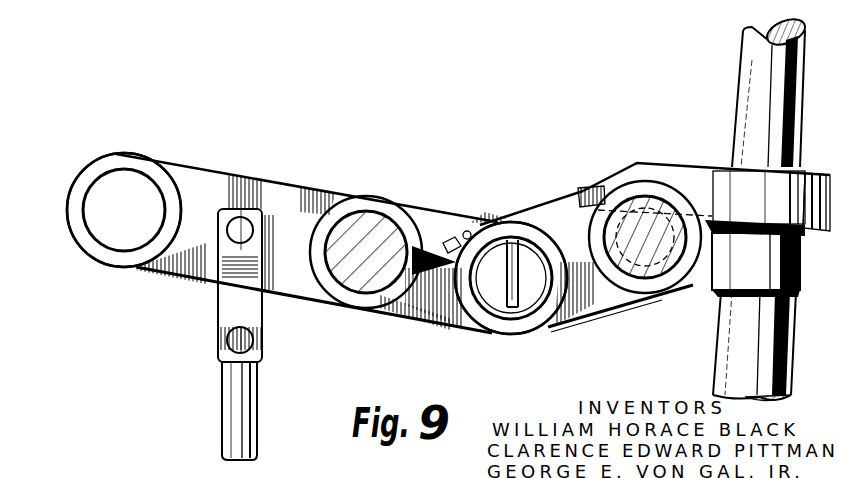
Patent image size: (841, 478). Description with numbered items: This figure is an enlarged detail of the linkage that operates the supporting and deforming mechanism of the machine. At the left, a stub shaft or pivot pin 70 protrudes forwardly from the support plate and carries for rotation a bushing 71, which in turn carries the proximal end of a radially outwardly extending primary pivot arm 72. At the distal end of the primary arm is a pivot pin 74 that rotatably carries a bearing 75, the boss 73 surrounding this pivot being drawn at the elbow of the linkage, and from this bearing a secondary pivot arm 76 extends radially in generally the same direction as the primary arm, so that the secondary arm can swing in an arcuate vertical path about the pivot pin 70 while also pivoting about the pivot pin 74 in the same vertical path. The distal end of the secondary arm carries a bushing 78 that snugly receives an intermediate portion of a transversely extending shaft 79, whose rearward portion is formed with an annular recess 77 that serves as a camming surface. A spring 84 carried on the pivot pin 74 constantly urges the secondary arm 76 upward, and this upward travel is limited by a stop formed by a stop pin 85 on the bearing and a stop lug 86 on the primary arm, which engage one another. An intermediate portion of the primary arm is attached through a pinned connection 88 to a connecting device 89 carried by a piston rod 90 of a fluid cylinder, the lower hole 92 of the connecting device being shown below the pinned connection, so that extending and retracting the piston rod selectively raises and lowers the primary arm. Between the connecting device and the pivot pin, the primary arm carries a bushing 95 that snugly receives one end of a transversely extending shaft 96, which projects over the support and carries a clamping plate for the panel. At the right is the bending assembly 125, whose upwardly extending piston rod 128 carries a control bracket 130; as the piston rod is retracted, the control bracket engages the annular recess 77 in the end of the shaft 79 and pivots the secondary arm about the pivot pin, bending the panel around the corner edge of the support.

The pivot pin 70 is at (140, 183).
The bushing 71 is at (180, 204).
The primary pivot arm 72 is at (237, 171).
The center boss 73 is at (482, 226).
The pivot pin 74 is at (500, 306).
The bearing 75 is at (521, 324).
The secondary pivot arm 76 is at (596, 311).
The annular recess 77 is at (628, 302).
The bushing 78 is at (672, 280).
The shaft 79 is at (622, 259).
The spring 84 is at (538, 253).
The stop pin 85 is at (455, 242).
The stop lug 86 is at (421, 299).
The pinned connection 88 is at (244, 228).
The connecting device 89 is at (256, 284).
The piston rod 90 is at (252, 398).
The lower pin hole 92 is at (246, 345).
The bushing 95 is at (385, 210).
The shaft 96 is at (364, 226).
The bending assembly 125 is at (734, 100).
The piston rod 128 is at (730, 348).
The control bracket 130 is at (651, 160).